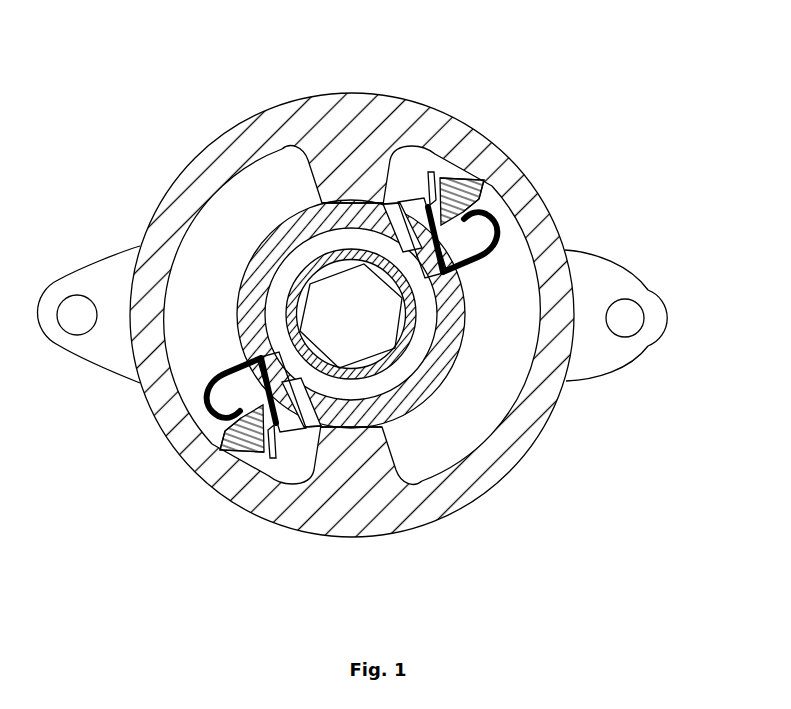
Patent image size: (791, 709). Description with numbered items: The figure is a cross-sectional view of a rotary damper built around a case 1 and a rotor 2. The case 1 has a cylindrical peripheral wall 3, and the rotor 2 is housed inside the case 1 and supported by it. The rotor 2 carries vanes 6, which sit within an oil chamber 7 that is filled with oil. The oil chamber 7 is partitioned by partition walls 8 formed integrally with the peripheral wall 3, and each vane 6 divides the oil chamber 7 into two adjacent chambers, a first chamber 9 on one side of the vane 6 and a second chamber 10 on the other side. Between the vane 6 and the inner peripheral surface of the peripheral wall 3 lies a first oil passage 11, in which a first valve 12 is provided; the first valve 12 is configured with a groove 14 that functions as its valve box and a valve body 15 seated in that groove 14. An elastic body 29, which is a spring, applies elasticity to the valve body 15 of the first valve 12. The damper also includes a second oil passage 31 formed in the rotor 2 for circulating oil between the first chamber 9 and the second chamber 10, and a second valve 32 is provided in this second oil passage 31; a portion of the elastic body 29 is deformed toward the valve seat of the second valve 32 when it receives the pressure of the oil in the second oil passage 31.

The case 1 is at (205, 148).
The rotor 2 is at (450, 383).
The peripheral wall 3 is at (178, 175).
The vane 6 is at (421, 186).
The oil chamber 7 is at (203, 233).
The partition wall 8 is at (320, 200).
The first chamber 9 is at (412, 160).
The second chamber 10 is at (138, 245).
The first oil passage 11 is at (495, 203).
The first valve 12 is at (485, 190).
The groove 14 is at (517, 218).
The valve body 15 is at (462, 180).
The elastic body 29 is at (503, 235).
The second oil passage 31 is at (380, 198).
The second valve 32 is at (353, 203).